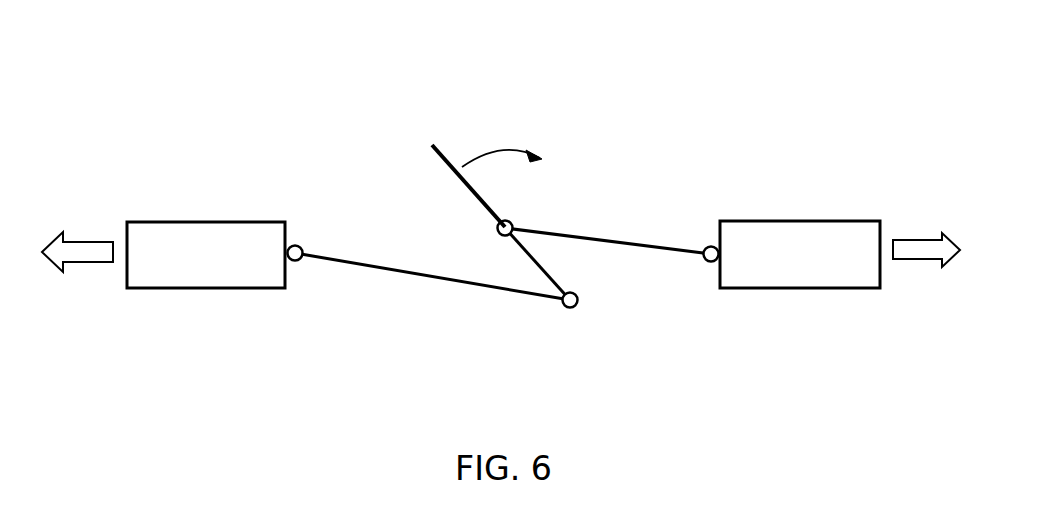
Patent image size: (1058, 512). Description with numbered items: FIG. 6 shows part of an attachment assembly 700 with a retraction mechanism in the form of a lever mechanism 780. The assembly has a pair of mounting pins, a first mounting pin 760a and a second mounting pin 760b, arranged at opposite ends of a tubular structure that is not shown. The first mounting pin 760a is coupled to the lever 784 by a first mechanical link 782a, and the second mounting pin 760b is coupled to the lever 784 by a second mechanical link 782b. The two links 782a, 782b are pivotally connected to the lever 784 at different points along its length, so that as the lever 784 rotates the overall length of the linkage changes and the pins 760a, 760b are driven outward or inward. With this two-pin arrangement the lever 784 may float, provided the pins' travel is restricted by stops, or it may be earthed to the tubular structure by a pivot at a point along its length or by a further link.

The linkage mechanism 700 is at (507, 414).
The first mounting pin 760a is at (783, 238).
The second mounting pin 760b is at (195, 236).
The lever mechanism 780 is at (472, 136).
The first mechanical link 782a is at (633, 213).
The second mechanical link 782b is at (442, 282).
The lever 784 is at (460, 178).